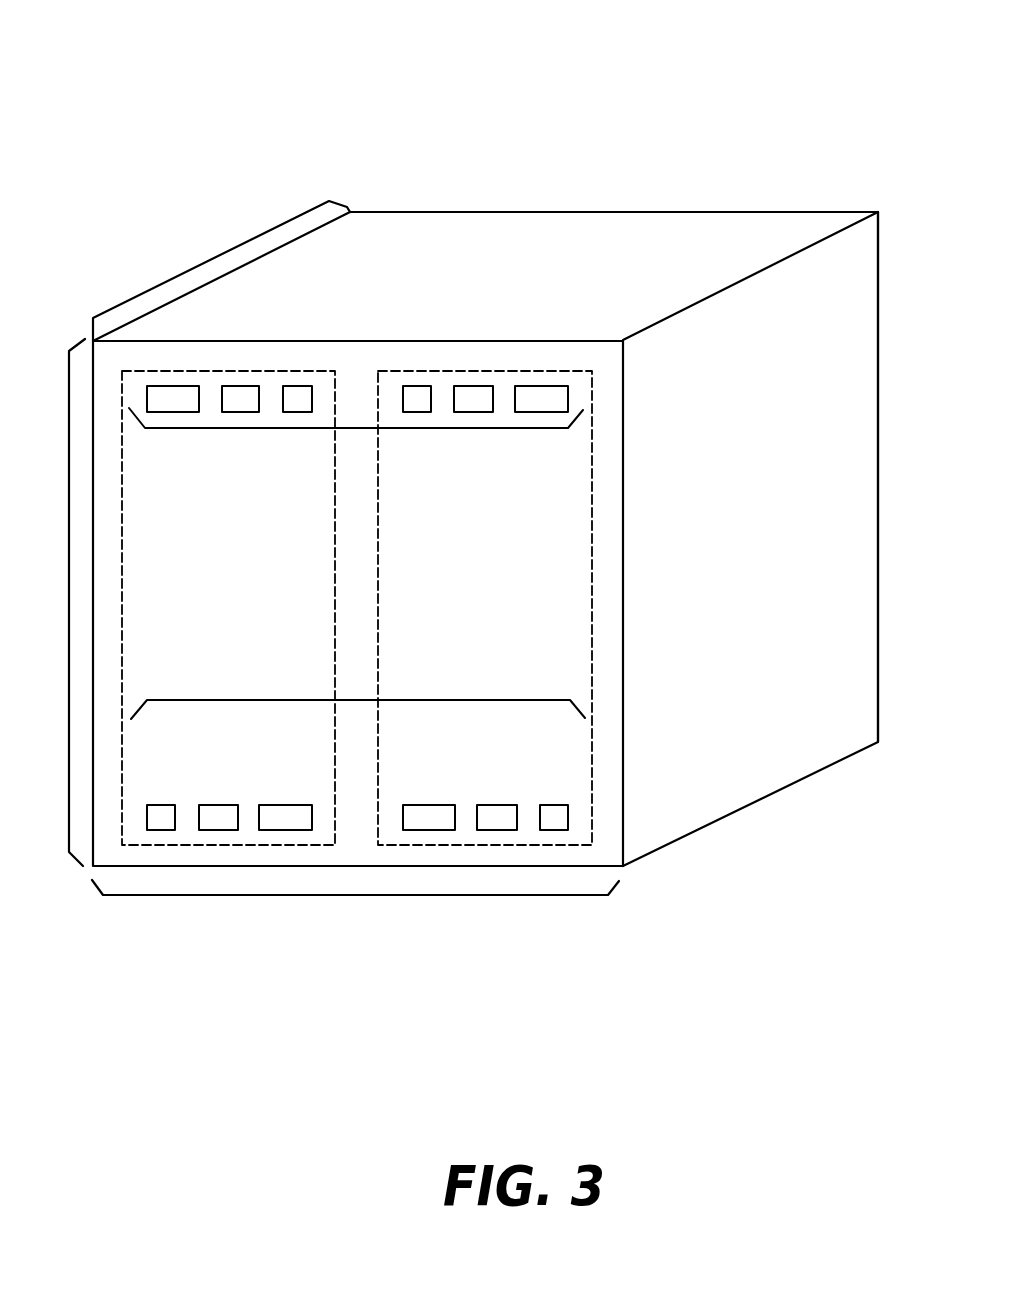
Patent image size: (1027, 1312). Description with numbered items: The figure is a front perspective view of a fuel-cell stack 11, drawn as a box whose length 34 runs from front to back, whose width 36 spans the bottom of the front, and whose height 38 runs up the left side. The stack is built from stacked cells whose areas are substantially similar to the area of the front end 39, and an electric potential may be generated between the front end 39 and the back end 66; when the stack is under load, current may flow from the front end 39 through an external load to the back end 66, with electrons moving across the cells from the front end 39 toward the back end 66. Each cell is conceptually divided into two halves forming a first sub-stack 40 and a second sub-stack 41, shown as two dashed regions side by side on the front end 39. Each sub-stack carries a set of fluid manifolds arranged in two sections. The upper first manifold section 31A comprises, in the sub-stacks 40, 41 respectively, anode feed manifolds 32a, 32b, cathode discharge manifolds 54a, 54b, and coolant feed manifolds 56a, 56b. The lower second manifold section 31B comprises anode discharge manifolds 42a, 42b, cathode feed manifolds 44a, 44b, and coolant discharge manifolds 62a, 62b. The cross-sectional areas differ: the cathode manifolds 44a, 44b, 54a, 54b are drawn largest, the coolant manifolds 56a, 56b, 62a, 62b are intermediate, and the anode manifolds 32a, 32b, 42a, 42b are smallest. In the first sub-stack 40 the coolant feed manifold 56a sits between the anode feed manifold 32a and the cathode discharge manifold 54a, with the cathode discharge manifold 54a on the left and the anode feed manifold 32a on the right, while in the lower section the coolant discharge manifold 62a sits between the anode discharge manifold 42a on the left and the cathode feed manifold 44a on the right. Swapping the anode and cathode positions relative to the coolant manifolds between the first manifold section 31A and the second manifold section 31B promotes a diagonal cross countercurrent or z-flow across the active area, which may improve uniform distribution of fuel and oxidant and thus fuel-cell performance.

The fuel-cell stack 11 is at (116, 55).
The length 34 is at (218, 254).
The width 36 is at (353, 897).
The height 38 is at (69, 551).
The back end 66 is at (878, 316).
The front end 39 is at (608, 452).
The first sub-stack 40 is at (122, 578).
The second sub-stack 41 is at (592, 571).
The first manifold section 31A is at (348, 428).
The second manifold section 31B is at (358, 700).
The anode feed manifold 32a is at (303, 384).
The anode feed manifold 32b is at (408, 384).
The cathode discharge manifold 54a is at (185, 384).
The cathode discharge manifold 54b is at (526, 384).
The coolant feed manifold 56a is at (243, 384).
The coolant feed manifold 56b is at (467, 384).
The anode discharge manifold 42a is at (160, 803).
The anode discharge manifold 42b is at (556, 803).
The cathode feed manifold 44a is at (281, 803).
The cathode feed manifold 44b is at (436, 803).
The coolant discharge manifold 62a is at (221, 803).
The coolant discharge manifold 62b is at (497, 803).